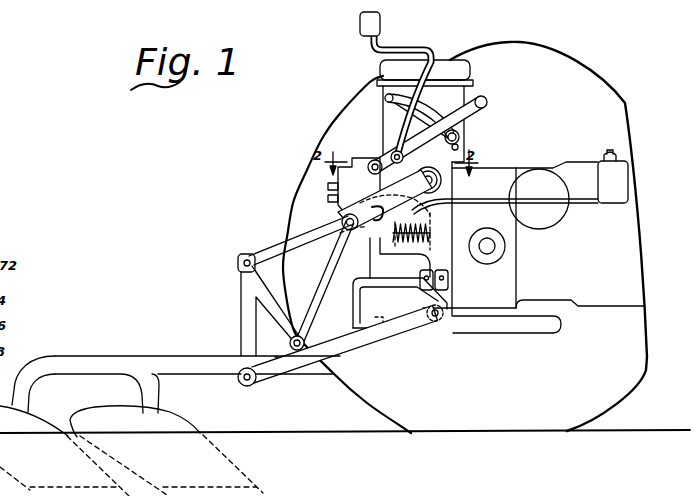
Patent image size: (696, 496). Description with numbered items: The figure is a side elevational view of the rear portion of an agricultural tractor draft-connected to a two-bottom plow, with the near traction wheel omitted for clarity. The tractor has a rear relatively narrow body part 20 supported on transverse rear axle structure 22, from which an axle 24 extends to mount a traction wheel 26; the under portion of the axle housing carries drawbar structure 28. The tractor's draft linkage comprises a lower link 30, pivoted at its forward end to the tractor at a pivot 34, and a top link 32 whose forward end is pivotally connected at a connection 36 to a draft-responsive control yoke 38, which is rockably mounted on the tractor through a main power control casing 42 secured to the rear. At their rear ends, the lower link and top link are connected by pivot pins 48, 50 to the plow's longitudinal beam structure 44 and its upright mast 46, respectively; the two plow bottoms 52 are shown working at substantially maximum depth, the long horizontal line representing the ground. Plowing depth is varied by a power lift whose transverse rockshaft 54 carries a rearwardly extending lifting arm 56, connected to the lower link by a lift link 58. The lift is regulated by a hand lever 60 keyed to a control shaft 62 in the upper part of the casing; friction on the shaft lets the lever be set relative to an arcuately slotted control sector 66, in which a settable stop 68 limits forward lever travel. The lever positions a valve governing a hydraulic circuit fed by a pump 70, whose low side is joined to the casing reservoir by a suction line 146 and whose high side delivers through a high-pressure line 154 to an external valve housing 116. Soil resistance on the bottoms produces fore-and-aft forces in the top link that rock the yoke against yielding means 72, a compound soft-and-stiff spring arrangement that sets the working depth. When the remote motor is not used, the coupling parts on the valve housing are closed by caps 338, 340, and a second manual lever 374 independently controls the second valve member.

The body part 20 is at (629, 278).
The rear axle structure 22 is at (507, 275).
The axle 24 is at (495, 248).
The traction wheel 26 is at (573, 75).
The drawbar structure 28 is at (512, 329).
The lower link 30 is at (362, 346).
The top link 32 is at (283, 258).
The pivot 34 is at (434, 322).
The pivotal connection 36 is at (312, 298).
The control yoke 38 is at (385, 222).
The main casing 42 is at (448, 262).
The beam structure 44 is at (151, 364).
The mast 46 is at (243, 300).
The pivot pin 48 is at (246, 385).
The pivot pin 50 is at (243, 263).
The plow bottoms 52 is at (67, 427).
The rockshaft 54 is at (442, 184).
The lifting arm 56 is at (341, 221).
The lift link 58 is at (323, 280).
The hand lever 60 is at (487, 105).
The control shaft 62 is at (392, 133).
The control sector 66 is at (465, 112).
The stop 68 is at (462, 135).
The pump 70 is at (623, 171).
The yielding means 72 is at (436, 230).
The external valve housing 116 is at (321, 118).
The suction line 146 is at (613, 151).
The high-pressure line 154 is at (578, 205).
The cap 338 is at (328, 186).
The cap 340 is at (328, 198).
The second manual lever 374 is at (356, 93).